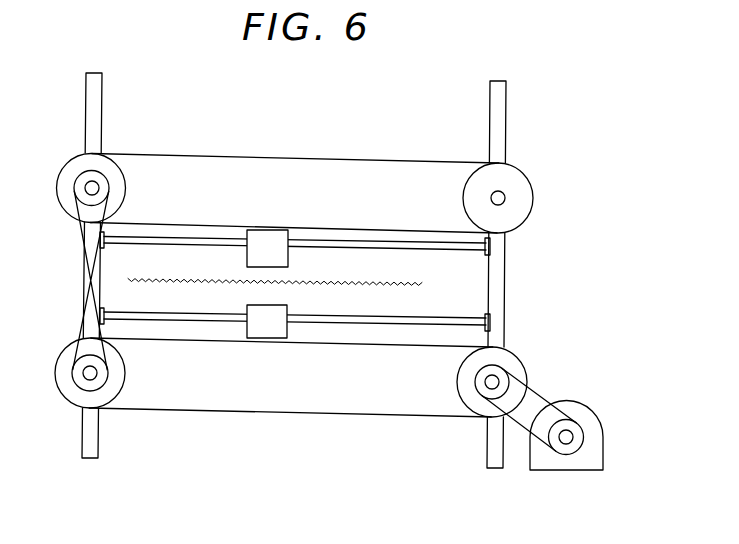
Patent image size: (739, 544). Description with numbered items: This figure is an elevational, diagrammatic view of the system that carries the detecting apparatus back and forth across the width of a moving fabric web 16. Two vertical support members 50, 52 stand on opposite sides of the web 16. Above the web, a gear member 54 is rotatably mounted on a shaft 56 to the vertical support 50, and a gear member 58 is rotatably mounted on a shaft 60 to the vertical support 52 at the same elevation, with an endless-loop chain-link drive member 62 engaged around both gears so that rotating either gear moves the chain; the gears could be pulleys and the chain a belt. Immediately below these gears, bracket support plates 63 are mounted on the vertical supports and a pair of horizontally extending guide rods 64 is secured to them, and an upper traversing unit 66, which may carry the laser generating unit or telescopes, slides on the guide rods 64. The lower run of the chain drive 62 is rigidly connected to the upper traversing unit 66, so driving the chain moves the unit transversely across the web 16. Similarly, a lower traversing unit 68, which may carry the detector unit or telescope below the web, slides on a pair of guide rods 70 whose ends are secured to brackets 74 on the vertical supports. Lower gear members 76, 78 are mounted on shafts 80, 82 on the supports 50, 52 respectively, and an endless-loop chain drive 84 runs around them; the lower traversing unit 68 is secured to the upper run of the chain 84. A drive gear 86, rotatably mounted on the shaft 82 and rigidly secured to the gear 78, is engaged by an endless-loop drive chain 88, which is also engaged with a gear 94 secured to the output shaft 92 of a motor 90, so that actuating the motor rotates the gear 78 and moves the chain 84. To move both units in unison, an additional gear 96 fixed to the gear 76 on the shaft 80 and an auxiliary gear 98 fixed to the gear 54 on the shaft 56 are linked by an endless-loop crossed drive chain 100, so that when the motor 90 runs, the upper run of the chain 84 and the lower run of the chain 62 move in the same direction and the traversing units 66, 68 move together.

The fabric web 16 is at (375, 285).
The vertical support member 50 is at (101, 99).
The vertical support member 52 is at (490, 98).
The gear member 54 is at (85, 156).
The shaft 56 is at (99, 190).
The gear member 58 is at (519, 177).
The shaft 60 is at (506, 201).
The endless-loop chain-link drive member 62 is at (391, 157).
The upper rail end brackets 63 is at (104, 244).
The horizontally extending guide rods 64 is at (216, 246).
The upper traversing unit 66 is at (285, 233).
The lower traversing unit 68 is at (288, 312).
The guide rods 70 is at (215, 298).
The brackets 74 is at (101, 314).
The lower gear member 76 is at (70, 399).
The lower gear member 78 is at (517, 359).
The shaft 80 is at (93, 376).
The shaft 82 is at (507, 380).
The endless-loop chain drive 84 is at (339, 346).
The drive gear 86 is at (486, 383).
The endless-loop drive chain 88 is at (528, 433).
The motor 90 is at (583, 408).
The output shaft 92 is at (565, 441).
The gear 94 is at (582, 453).
The additional gear 96 is at (108, 373).
The auxiliary gear 98 is at (108, 180).
The endless-loop crossed drive chain 100 is at (79, 224).